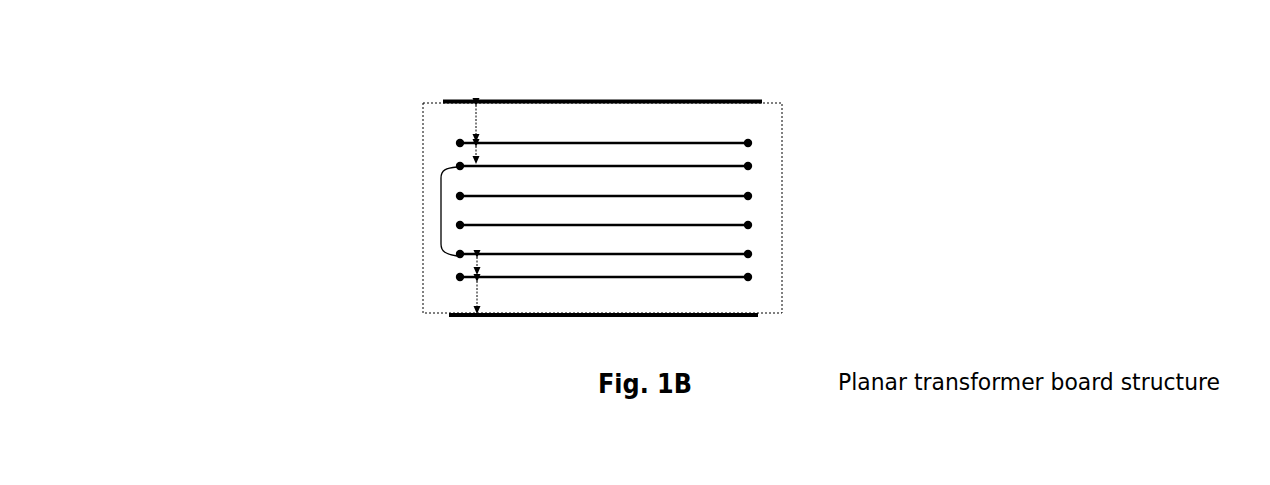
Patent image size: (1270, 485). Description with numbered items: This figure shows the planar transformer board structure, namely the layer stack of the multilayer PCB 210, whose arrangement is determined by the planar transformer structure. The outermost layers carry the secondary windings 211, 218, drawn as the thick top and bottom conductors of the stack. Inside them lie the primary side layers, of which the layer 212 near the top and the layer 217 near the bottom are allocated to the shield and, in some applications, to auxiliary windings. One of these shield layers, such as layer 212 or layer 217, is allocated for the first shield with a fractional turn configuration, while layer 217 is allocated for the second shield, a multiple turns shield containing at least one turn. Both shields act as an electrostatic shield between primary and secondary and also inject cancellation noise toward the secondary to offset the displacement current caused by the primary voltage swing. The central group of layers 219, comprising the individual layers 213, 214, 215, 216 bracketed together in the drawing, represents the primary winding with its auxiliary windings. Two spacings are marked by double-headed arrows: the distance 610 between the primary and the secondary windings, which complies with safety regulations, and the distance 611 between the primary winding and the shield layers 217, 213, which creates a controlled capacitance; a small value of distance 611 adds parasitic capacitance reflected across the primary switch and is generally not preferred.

The multilayer PCB 210 is at (421, 104).
The secondary winding 211 is at (763, 100).
The shield layer 212 is at (753, 142).
The shield 213 is at (753, 165).
The primary winding layer 214 is at (753, 195).
The primary winding layer 215 is at (753, 225).
The primary winding layer 216 is at (753, 256).
The second shield layer 217 is at (753, 279).
The secondary winding 218 is at (759, 316).
The primary winding layers 219 is at (441, 211).
The distance between primary and secondary 610 is at (471, 125).
The distance between primary winding and shield 611 is at (465, 152).